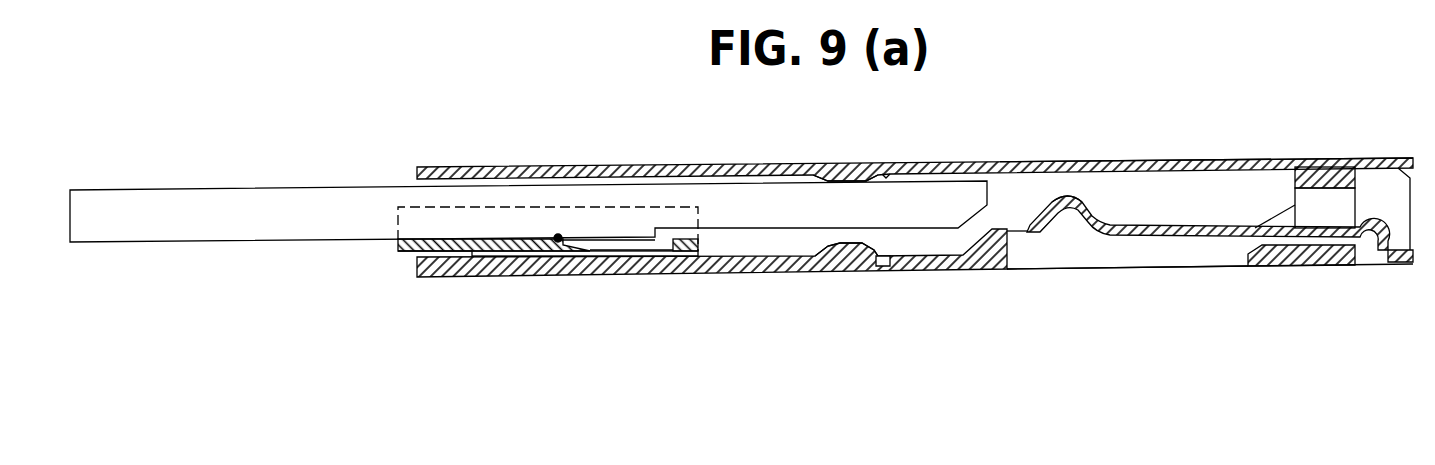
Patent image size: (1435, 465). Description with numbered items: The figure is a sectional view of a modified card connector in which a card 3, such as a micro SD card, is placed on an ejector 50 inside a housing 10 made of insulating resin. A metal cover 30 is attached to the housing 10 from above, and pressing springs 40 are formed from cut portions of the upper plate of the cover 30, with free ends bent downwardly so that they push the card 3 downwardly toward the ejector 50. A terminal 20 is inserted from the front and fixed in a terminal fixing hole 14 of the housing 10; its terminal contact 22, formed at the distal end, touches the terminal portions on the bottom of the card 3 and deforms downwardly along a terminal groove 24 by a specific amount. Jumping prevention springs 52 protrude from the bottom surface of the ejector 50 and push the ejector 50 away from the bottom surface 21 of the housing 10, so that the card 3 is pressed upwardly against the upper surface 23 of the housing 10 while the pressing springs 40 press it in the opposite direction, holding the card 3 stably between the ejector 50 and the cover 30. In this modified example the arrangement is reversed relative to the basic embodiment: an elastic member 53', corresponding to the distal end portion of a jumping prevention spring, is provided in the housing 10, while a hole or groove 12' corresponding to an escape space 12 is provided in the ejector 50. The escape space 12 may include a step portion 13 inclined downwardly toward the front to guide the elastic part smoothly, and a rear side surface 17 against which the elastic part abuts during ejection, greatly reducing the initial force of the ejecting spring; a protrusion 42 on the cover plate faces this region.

The card 3 is at (120, 193).
The housing 10 is at (1322, 262).
The escape space 12 is at (712, 281).
The hole or groove 12' is at (612, 287).
The step portion 13 is at (553, 252).
The terminal fixing hole 14 is at (1327, 195).
The rear side surface 17 is at (587, 254).
The terminal 20 is at (1222, 240).
The bottom surface 21 is at (468, 258).
The terminal contact 22 is at (1067, 197).
The upper surface 23 is at (886, 173).
The terminal groove 24 is at (1068, 258).
The cover 30 is at (1188, 165).
The pressing spring 40 is at (616, 166).
The protrusion 42 is at (833, 173).
The ejector 50 is at (468, 217).
The jumping prevention spring 52 is at (403, 254).
The elastic member 53' is at (847, 288).